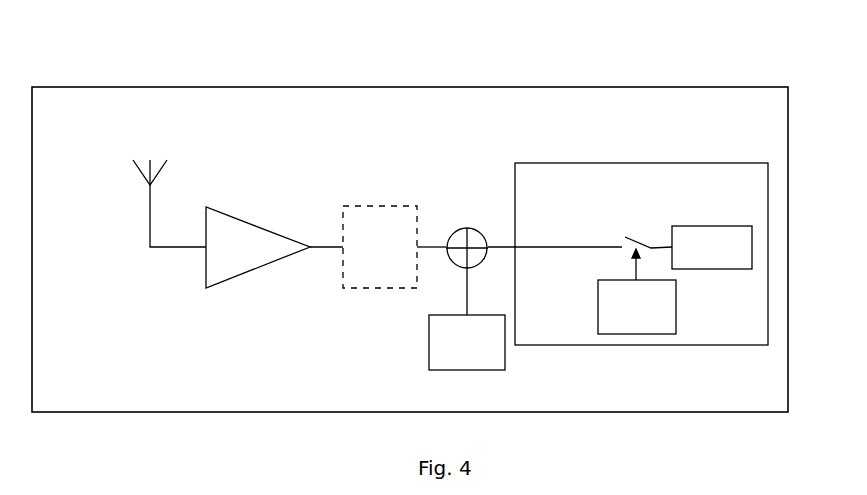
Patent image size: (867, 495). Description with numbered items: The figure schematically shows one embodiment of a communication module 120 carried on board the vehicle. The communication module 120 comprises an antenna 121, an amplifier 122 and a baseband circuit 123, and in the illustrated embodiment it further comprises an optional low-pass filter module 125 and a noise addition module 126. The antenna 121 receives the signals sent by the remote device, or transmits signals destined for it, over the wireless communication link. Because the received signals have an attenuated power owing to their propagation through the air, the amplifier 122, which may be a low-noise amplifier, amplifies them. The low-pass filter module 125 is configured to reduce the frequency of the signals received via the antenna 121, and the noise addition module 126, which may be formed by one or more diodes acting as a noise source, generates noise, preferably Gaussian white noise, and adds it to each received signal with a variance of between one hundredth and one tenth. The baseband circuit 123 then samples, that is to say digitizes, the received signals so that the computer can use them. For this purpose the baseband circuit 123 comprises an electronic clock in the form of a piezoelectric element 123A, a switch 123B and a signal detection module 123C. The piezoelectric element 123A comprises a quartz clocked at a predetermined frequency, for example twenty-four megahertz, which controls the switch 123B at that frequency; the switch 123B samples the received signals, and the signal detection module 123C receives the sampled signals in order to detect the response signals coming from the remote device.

The communication module 120 is at (586, 86).
The antenna 121 is at (150, 201).
The amplifier 122 is at (274, 247).
The baseband circuit 123 is at (671, 162).
The piezoelectric element 123A is at (637, 291).
The switch 123B is at (631, 235).
The signal detection module 123C is at (712, 247).
The low-pass filter module 125 is at (394, 247).
The noise addition module 126 is at (525, 299).